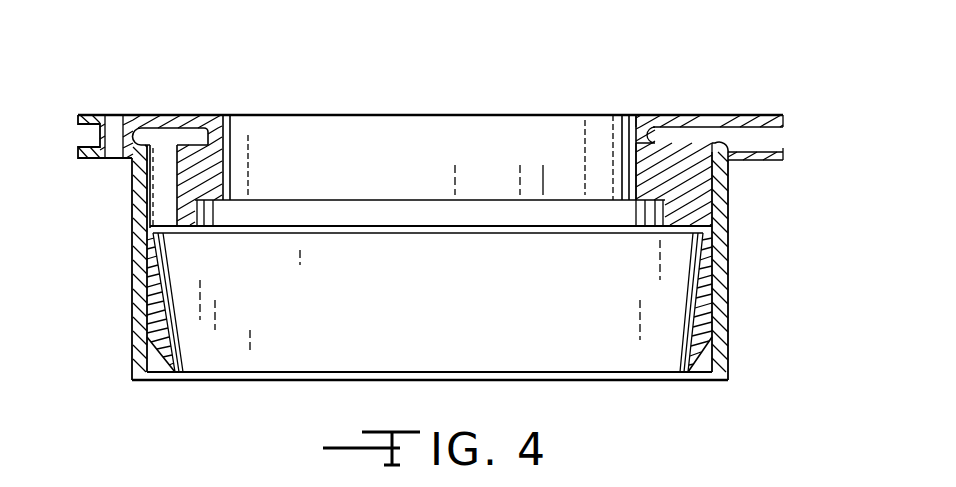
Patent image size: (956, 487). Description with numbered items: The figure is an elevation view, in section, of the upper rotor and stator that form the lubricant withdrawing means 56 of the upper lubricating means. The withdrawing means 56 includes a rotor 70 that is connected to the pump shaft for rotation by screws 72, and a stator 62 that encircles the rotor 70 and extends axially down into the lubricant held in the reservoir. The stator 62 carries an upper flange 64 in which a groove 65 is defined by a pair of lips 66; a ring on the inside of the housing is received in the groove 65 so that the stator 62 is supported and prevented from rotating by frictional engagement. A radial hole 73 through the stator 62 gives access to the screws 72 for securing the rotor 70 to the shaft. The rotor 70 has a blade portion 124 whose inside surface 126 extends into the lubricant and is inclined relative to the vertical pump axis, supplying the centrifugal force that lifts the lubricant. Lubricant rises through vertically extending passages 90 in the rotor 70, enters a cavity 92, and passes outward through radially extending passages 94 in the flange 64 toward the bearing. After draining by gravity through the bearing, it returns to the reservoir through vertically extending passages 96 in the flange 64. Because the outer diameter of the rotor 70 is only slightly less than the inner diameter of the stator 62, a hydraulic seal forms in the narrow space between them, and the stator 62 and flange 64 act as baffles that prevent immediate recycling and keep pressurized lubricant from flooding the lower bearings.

The means for withdrawing lubricant 56 is at (737, 231).
The stator 62 is at (730, 293).
The upper flange 64 is at (747, 113).
The groove 65 is at (85, 137).
The lips 66 is at (78, 155).
The rotor 70 is at (690, 380).
The screws 72 is at (700, 180).
The radial hole 73 is at (130, 187).
The vertically extending passages 90 is at (172, 244).
The cavity 92 is at (183, 137).
The radially extending passages 94 is at (748, 138).
The vertically extending passages 96 is at (115, 113).
The blade portion 124 is at (161, 378).
The inside surface 126 is at (177, 327).